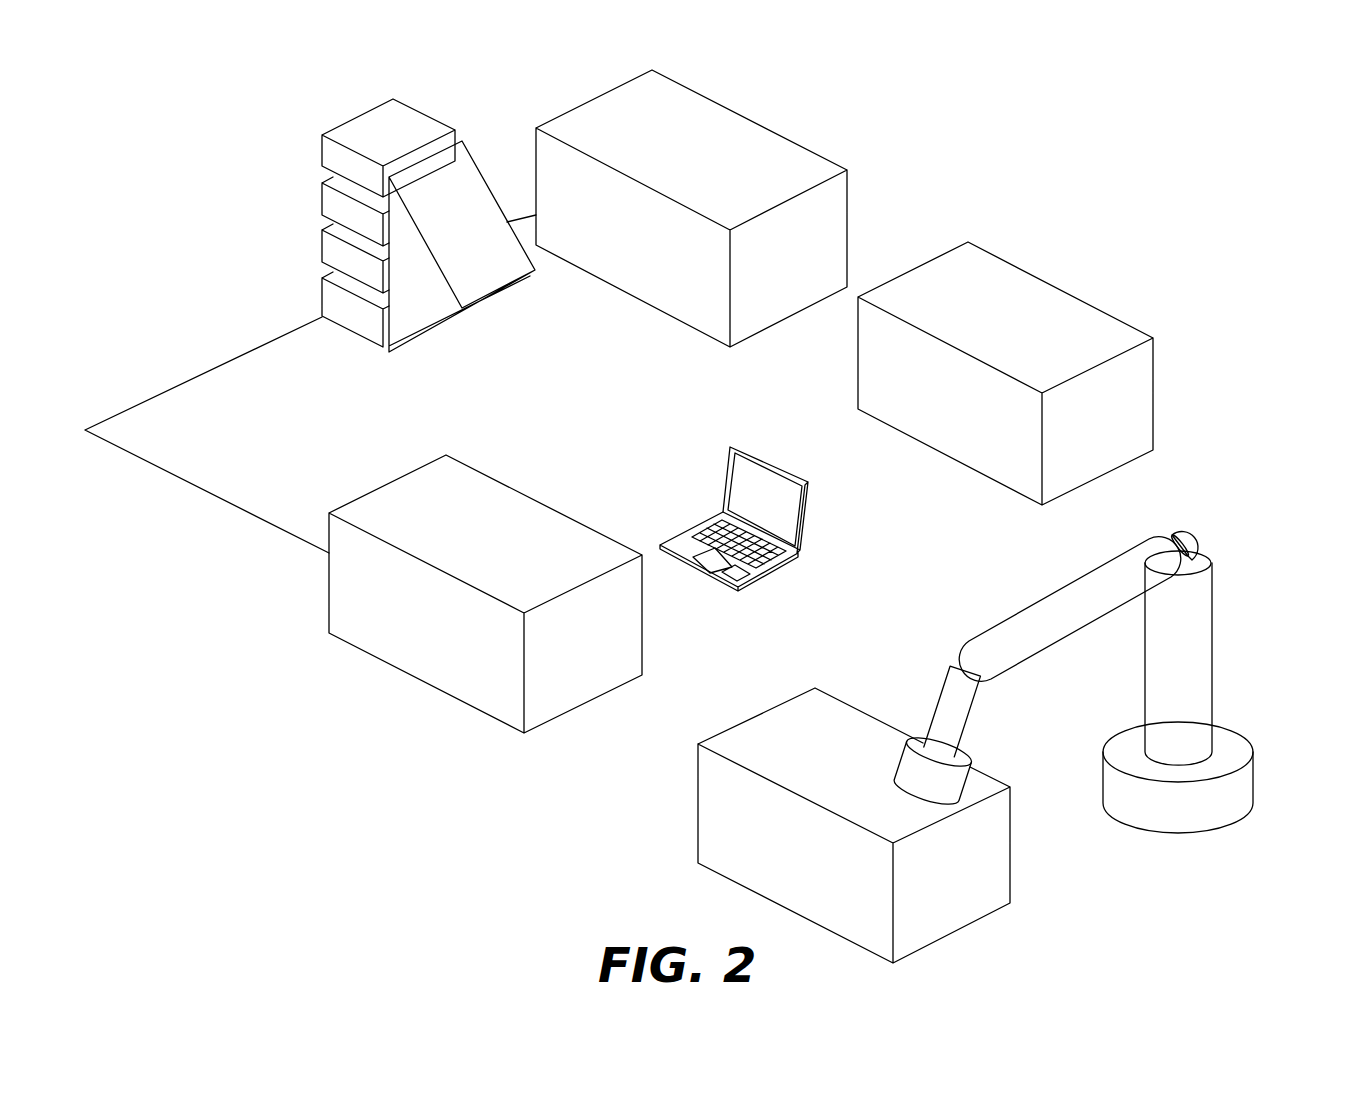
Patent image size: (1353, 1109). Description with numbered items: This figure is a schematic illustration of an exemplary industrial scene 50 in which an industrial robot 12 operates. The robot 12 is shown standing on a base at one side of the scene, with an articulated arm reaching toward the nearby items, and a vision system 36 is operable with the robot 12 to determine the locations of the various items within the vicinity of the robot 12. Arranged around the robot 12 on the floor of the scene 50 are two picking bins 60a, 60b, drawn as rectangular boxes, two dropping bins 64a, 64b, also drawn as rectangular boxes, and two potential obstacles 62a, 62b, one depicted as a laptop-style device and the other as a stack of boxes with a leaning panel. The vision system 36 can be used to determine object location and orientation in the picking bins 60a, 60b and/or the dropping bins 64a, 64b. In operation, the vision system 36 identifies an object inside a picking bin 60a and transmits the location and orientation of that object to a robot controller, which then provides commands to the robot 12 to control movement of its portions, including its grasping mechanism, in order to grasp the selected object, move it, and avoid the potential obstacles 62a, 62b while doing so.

The robot 12 is at (1197, 650).
The vision system 36 is at (1198, 536).
The industrial scene 50 is at (1047, 207).
The picking bin 60a is at (407, 625).
The picking bin 60b is at (752, 829).
The potential obstacle 62a is at (810, 525).
The potential obstacle 62b is at (461, 215).
The dropping bin 64a is at (797, 143).
The dropping bin 64b is at (1058, 283).